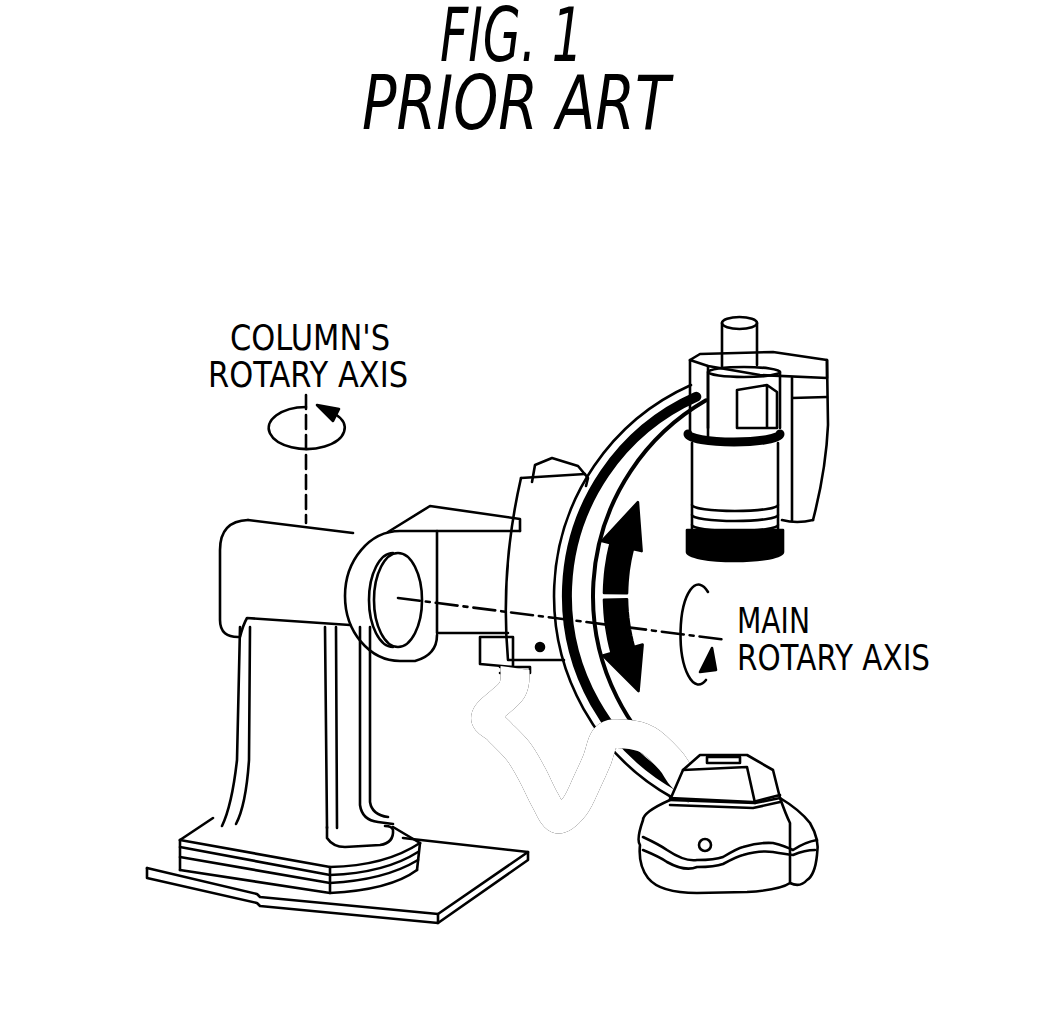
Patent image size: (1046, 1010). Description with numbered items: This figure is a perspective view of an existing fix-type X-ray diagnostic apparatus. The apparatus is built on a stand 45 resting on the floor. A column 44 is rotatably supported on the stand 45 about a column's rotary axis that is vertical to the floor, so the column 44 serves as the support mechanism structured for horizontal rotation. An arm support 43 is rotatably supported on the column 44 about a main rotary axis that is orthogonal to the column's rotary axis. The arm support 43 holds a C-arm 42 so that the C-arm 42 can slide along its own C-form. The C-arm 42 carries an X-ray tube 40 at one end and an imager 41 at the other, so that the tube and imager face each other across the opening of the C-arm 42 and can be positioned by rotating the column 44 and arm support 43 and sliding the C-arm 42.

The X-ray tube 40 is at (808, 812).
The imager 41 is at (807, 473).
The C-arm 42 is at (636, 400).
The arm support 43 is at (476, 503).
The column 44 is at (228, 580).
The stand 45 is at (178, 845).